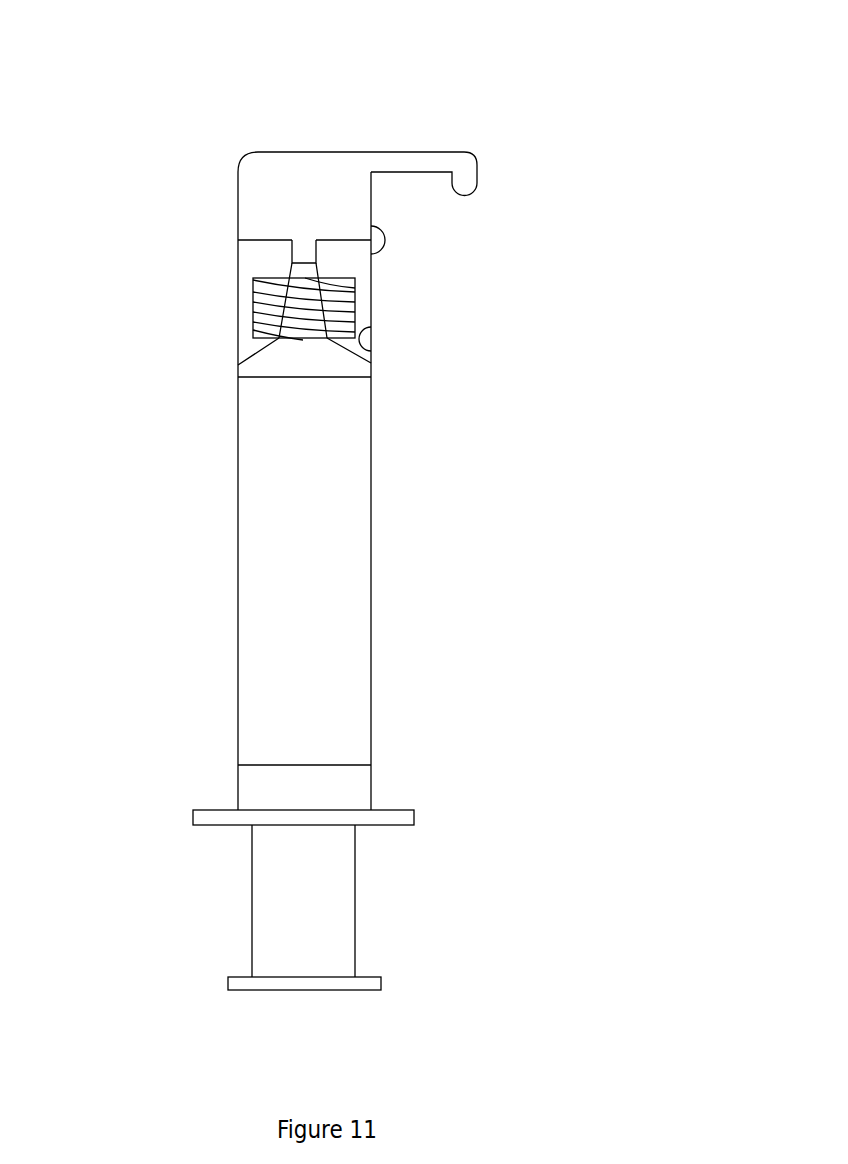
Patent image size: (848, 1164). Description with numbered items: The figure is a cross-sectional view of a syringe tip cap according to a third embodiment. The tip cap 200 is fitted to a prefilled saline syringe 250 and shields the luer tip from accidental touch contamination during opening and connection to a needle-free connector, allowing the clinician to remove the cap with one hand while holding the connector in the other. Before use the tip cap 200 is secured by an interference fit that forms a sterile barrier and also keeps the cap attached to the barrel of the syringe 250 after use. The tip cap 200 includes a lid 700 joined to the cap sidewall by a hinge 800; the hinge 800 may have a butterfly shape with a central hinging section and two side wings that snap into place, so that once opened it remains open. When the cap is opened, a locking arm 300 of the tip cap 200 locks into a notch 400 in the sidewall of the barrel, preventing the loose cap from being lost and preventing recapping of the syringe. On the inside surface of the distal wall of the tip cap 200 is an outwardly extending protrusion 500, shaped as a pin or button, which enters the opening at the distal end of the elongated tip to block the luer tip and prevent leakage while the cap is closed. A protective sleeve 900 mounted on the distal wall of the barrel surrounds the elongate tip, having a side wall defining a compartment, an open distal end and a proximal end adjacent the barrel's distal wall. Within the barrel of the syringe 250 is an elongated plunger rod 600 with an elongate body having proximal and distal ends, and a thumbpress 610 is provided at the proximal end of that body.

The tip cap 200 is at (328, 500).
The syringe 250 is at (353, 615).
The locking arm 300 is at (484, 178).
The notch 400 is at (374, 340).
The outwardly extending protrusion 500 is at (292, 249).
The elongated plunger rod 600 is at (252, 912).
The thumbpress 610 is at (233, 987).
The lid 700 is at (313, 170).
The hinge 800 is at (388, 241).
The protective sleeve 900 is at (236, 318).